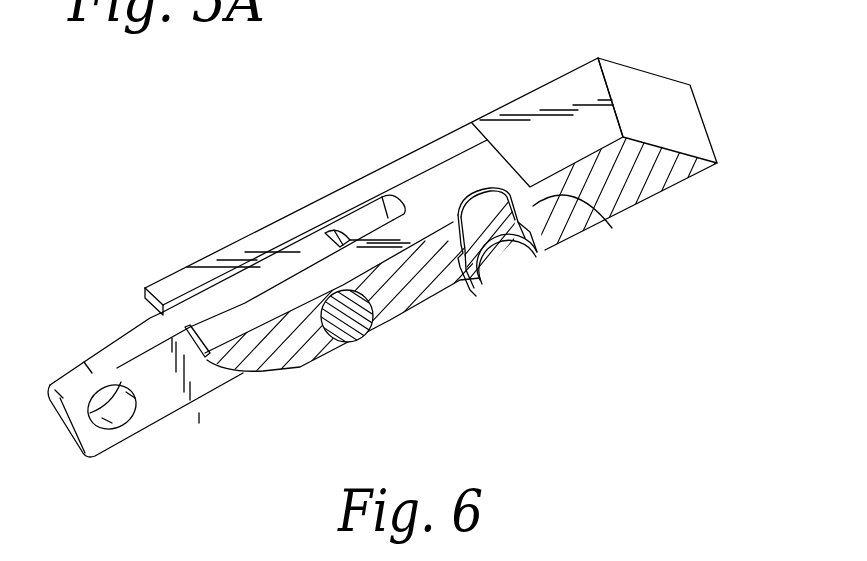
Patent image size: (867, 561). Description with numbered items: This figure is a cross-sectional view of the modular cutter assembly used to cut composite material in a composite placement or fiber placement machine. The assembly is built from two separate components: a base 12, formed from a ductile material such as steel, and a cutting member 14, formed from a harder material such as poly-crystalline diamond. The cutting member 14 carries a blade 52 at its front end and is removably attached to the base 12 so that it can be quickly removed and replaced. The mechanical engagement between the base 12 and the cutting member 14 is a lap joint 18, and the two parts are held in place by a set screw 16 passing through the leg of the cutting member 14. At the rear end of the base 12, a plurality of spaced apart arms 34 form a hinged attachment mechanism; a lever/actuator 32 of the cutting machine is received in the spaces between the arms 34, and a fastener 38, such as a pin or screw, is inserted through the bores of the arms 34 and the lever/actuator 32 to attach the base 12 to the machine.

The base 12 is at (407, 297).
The cutting member 14 is at (645, 202).
The set screw 16 is at (542, 255).
The lap joint 18 is at (602, 226).
The lever/actuator 32 is at (173, 400).
The arms 34 is at (188, 283).
The fastener 38 is at (350, 322).
The blade 52 is at (675, 105).